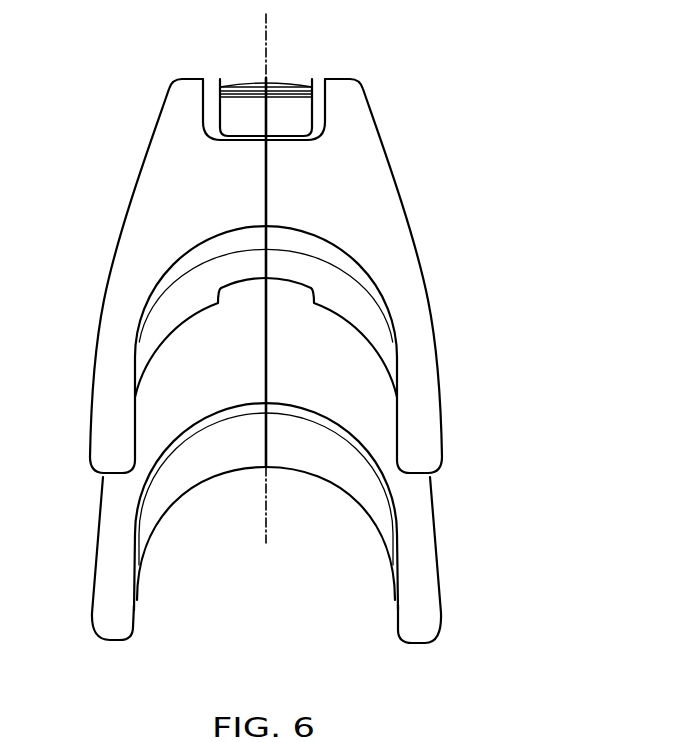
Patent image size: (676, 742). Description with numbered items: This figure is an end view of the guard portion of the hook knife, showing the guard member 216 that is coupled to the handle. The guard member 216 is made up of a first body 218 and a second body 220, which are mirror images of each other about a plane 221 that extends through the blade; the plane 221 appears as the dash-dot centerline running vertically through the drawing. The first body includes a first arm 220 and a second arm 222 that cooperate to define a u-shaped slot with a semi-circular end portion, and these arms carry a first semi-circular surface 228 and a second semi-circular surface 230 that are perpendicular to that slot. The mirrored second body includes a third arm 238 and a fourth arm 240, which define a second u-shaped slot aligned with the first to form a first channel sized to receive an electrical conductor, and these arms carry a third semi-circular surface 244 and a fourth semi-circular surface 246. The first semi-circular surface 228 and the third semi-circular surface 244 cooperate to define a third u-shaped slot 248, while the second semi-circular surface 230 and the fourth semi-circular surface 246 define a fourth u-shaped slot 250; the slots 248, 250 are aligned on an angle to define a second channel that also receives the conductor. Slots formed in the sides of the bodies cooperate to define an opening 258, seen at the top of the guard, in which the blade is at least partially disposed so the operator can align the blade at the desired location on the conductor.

The guard member 216 is at (373, 127).
The first body 218 is at (162, 128).
The first arm 220 is at (440, 557).
The plane 221 is at (268, 62).
The second arm 222 is at (440, 382).
The first semi-circular surface 228 is at (343, 480).
The second semi-circular surface 230 is at (363, 307).
The third arm 238 is at (115, 630).
The fourth arm 240 is at (90, 421).
The third semi-circular surface 244 is at (188, 480).
The fourth semi-circular surface 246 is at (176, 305).
The third u-shaped slot 248 is at (298, 600).
The fourth u-shaped slot 250 is at (155, 443).
The opening 258 is at (248, 118).